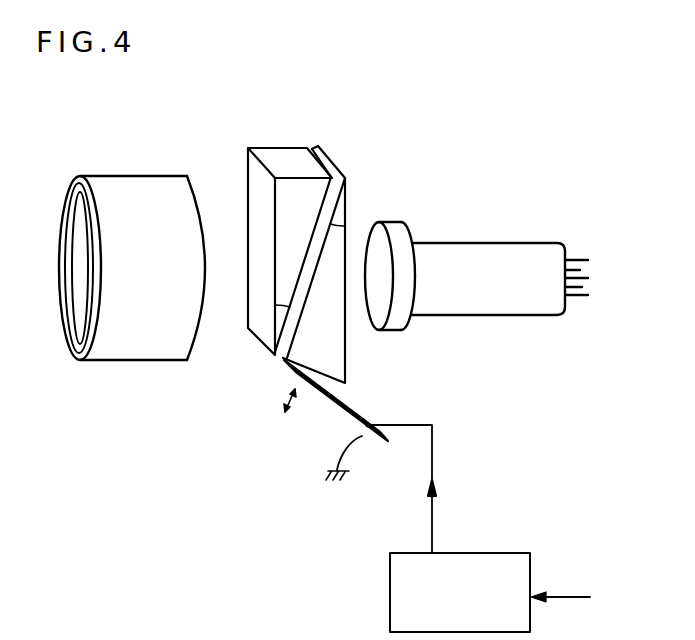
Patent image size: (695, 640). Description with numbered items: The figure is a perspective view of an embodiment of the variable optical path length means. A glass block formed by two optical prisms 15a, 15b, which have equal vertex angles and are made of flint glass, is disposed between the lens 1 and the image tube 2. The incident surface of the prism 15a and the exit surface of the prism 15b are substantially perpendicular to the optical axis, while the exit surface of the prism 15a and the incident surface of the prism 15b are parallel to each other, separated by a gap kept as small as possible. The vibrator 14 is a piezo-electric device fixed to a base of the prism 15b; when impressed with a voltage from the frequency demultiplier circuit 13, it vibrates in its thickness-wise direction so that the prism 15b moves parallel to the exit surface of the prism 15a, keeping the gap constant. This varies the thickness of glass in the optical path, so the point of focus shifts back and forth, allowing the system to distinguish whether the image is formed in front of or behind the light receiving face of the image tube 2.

The lens 1 is at (128, 176).
The image tube 2 is at (505, 243).
The frequency demultiplier circuit 13 is at (390, 570).
The vibrator 14 is at (363, 419).
The prism 15a is at (282, 148).
The prism 15b is at (340, 168).